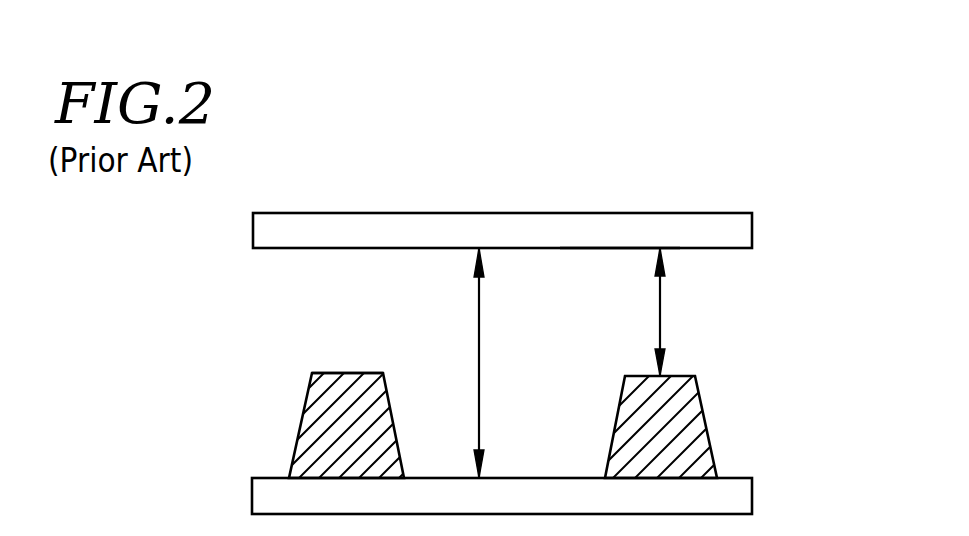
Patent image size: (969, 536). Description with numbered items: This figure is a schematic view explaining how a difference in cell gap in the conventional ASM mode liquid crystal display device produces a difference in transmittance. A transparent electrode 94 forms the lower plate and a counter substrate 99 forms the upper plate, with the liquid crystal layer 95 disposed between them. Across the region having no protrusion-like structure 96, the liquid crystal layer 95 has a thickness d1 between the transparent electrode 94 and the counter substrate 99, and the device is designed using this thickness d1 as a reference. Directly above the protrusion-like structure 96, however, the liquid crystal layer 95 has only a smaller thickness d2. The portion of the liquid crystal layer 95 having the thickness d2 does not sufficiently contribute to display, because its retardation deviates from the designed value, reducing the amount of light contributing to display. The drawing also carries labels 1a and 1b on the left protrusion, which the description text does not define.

The spacer (column spacer) 1a is at (297, 433).
The top surface of spacer 1b is at (340, 373).
The transparent electrode 94 is at (740, 495).
The liquid crystal layer 95 is at (620, 261).
The protrusion-like structure 96 is at (673, 442).
The counter substrate 99 is at (732, 236).
The thickness of the liquid crystal layer d1 is at (479, 383).
The thickness directly above the protrusion-like structure d2 is at (660, 322).